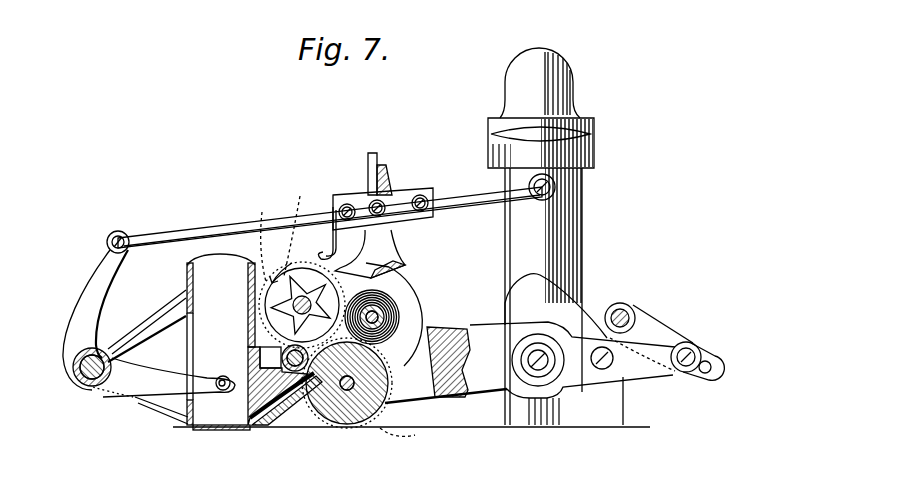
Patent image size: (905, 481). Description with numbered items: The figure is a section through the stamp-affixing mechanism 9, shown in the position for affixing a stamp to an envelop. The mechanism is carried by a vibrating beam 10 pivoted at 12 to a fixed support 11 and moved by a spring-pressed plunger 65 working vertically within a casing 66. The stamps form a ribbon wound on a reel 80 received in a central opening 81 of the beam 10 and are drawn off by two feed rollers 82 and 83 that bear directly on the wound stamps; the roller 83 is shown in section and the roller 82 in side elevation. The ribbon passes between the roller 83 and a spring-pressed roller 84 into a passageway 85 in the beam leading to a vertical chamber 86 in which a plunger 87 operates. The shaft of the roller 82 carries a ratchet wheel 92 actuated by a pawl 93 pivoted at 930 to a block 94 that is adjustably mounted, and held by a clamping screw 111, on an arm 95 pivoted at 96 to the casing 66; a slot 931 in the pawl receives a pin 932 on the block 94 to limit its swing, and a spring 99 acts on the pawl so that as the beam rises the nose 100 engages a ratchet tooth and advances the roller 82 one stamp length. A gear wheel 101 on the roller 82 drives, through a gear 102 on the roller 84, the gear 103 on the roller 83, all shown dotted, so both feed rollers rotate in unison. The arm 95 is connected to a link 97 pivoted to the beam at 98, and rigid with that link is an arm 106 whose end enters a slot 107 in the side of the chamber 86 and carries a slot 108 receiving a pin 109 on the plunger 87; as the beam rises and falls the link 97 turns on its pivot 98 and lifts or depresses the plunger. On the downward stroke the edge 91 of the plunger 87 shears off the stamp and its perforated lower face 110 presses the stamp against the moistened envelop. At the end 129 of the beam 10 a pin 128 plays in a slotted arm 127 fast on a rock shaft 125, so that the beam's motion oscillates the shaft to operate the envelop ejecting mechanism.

The casing 66 is at (585, 203).
The arm 95 is at (193, 235).
The pivot 96 is at (528, 187).
The pawl 93 is at (385, 242).
The slot 931 is at (381, 205).
The pin 932 is at (372, 196).
The pivot 930 is at (424, 197).
The block 94 is at (357, 200).
The clamping screw 111 is at (386, 163).
The spring 99 is at (334, 207).
The nose 100 is at (398, 256).
The feed roller 82 is at (298, 275).
The gear wheel 101 is at (296, 228).
The gear 102 is at (263, 212).
The reel 80 is at (384, 312).
The central opening 81 is at (420, 352).
The feed roller 83 is at (352, 418).
The gear 103 is at (404, 441).
The stamp-affixing mechanism 9 is at (297, 408).
The spring-pressed roller 84 is at (270, 357).
The passageway 85 is at (290, 398).
The plunger 87 is at (212, 275).
The ratchet wheel 92 is at (250, 300).
The slot 108 is at (234, 385).
The edge 91 is at (244, 432).
The perforations 110 is at (207, 431).
The link 97 is at (95, 285).
The pivot 98 is at (80, 382).
The arm 106 is at (155, 393).
The pin 109 is at (224, 390).
The slot 107 is at (186, 352).
The beam 10 is at (165, 322).
The chamber 86 is at (182, 424).
The fixed support 11 is at (623, 402).
The pivot 12 is at (603, 370).
The plunger 65 is at (543, 398).
The rock shaft 125 is at (621, 318).
The slotted arm 127 is at (655, 318).
The pin 128 is at (700, 358).
The end 129 is at (697, 386).